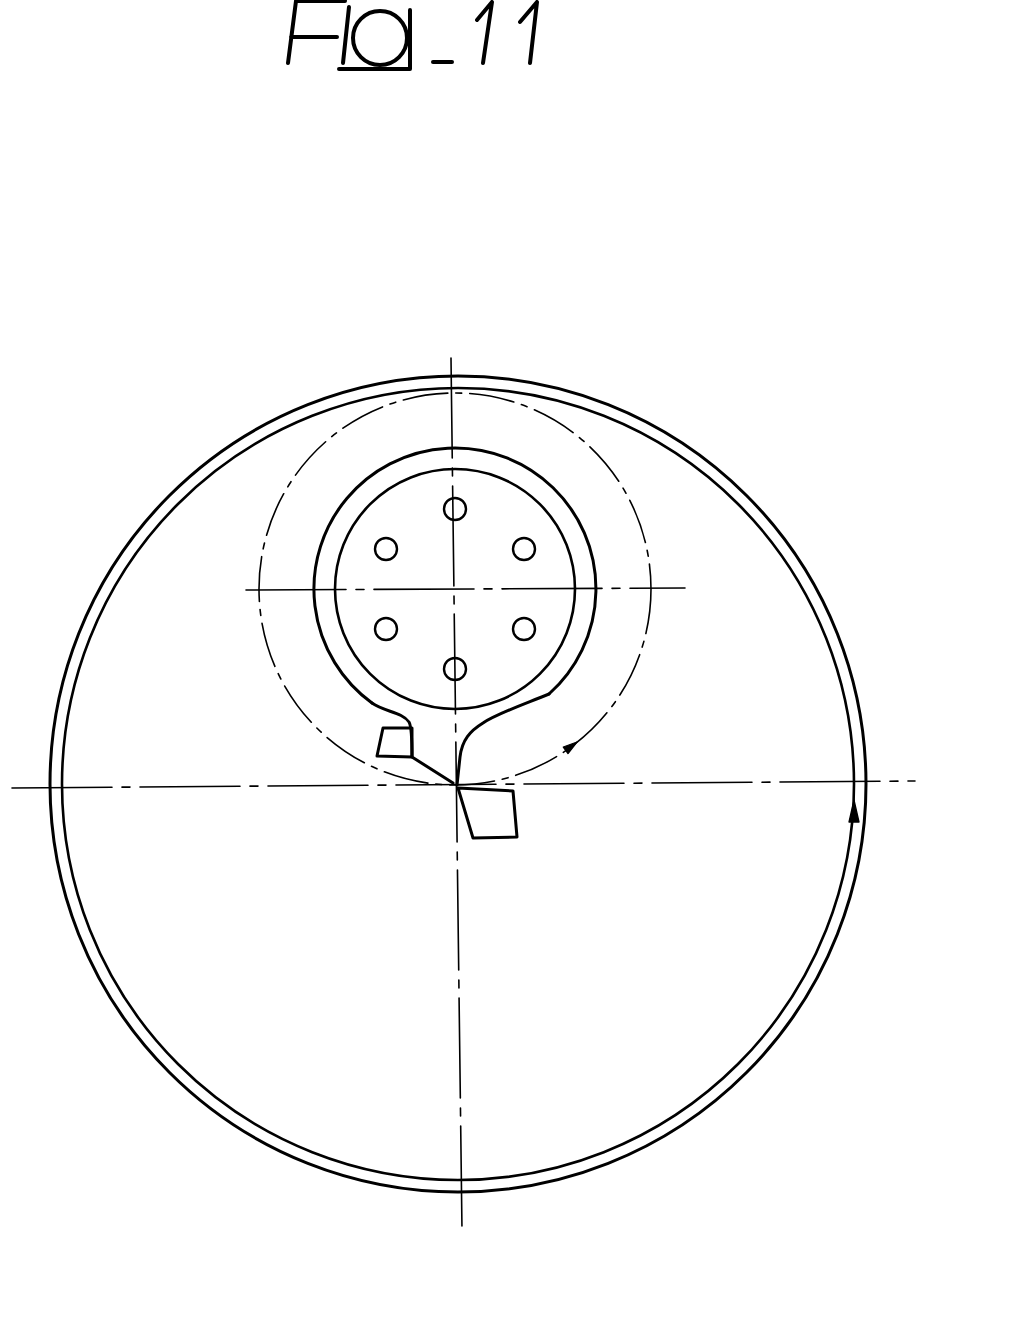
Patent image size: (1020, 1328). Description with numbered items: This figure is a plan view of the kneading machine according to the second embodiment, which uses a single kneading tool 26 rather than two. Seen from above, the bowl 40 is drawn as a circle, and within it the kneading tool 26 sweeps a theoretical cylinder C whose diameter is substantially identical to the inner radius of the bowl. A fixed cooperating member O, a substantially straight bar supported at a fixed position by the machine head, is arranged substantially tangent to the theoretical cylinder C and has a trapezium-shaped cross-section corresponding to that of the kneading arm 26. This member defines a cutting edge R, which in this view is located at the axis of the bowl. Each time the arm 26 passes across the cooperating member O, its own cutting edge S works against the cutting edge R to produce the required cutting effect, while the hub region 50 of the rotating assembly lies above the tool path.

The disc 40 is at (157, 1030).
The keyhole-shaped opening 50 is at (579, 634).
The kneading tool 26 is at (382, 740).
The theoretical cylinder C is at (600, 458).
The fixed cooperating member O is at (517, 815).
The cutting edge S is at (447, 786).
The cutting edge R is at (455, 788).